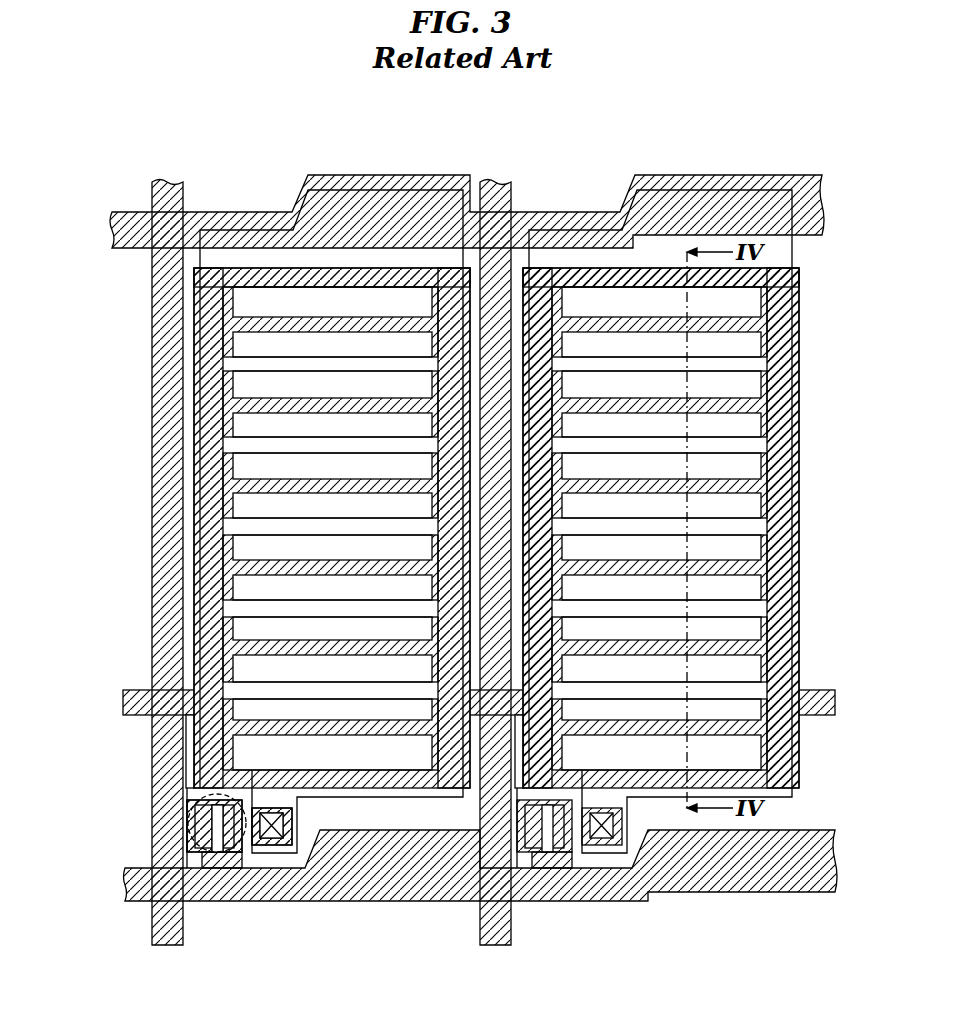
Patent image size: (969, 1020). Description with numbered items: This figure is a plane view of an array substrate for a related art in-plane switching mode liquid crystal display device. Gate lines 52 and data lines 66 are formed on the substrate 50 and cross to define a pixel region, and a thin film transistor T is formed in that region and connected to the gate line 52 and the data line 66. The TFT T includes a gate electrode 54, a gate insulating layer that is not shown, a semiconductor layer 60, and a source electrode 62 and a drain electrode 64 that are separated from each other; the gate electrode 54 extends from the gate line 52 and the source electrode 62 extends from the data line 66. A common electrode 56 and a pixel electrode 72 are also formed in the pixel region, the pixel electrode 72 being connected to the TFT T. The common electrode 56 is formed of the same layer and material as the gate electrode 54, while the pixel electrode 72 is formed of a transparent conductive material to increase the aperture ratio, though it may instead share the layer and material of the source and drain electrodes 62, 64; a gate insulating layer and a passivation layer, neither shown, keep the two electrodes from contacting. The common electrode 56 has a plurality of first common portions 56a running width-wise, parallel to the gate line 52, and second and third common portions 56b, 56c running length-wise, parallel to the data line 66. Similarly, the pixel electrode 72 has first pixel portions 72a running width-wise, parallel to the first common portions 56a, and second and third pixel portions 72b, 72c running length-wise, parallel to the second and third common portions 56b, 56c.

The substrate 50 is at (880, 870).
The gate line 52 is at (769, 893).
The gate electrode 54 is at (231, 797).
The common electrode 56 is at (328, 433).
The first common portion 56a is at (317, 268).
The second common portion 56b is at (215, 282).
The third common portion 56c is at (461, 298).
The semiconductor layer 60 is at (222, 855).
The source electrode 62 is at (206, 852).
The drain electrode 64 is at (284, 845).
The data line 66 is at (163, 180).
The pixel electrode 72 is at (657, 433).
The first pixel portion 72a is at (660, 362).
The second pixel portion 72b is at (544, 282).
The third pixel portion 72c is at (790, 298).
The TFT T is at (243, 850).